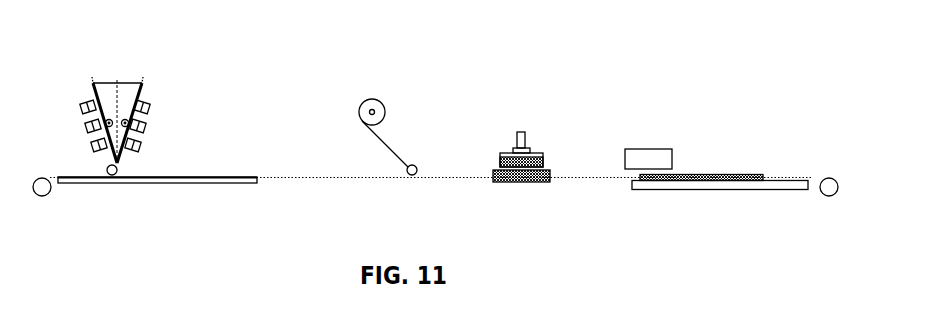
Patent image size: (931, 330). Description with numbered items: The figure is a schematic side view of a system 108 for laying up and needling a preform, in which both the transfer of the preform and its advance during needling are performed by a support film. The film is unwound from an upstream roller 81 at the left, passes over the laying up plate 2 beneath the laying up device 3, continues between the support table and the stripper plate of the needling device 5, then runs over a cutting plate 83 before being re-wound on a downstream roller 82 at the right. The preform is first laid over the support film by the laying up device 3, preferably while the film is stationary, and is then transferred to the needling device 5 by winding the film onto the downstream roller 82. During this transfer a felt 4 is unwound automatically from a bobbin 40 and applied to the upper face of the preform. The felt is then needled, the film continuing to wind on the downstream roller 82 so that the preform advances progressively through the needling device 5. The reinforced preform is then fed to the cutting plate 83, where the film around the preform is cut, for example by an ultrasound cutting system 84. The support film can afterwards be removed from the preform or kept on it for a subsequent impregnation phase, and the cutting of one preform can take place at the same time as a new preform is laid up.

The system of laying up and needling 108 is at (262, 89).
The laying up device 3 is at (108, 83).
The laying up plate 2 is at (210, 183).
The upstream roller 81 is at (47, 196).
The downstream roller 82 is at (825, 197).
The bobbin 40 is at (372, 98).
The felt 4 is at (393, 152).
The needling device 5 is at (527, 128).
The ultrasound cutting system 84 is at (650, 149).
The cutting plate 83 is at (660, 190).